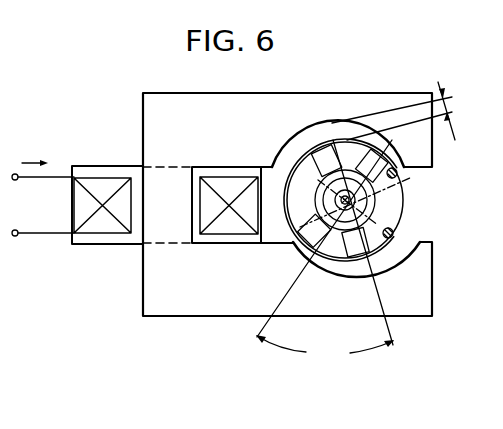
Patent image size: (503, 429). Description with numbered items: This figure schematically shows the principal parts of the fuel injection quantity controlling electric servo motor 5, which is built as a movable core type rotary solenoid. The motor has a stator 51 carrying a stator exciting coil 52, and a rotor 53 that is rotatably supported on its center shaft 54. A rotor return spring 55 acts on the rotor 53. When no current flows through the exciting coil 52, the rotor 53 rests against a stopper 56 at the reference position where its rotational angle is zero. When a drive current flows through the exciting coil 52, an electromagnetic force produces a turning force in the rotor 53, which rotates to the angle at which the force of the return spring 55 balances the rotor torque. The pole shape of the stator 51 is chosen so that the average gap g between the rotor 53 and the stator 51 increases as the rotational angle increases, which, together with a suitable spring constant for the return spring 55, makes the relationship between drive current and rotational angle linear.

The electric servo motor 5 is at (353, 90).
The stator 51 is at (185, 309).
The stator exciting coil 52 is at (103, 228).
The rotor 53 is at (362, 213).
The center shaft 54 is at (370, 206).
The rotor return spring 55 is at (316, 188).
The stopper 56 is at (412, 177).
The average gap g is at (449, 104).